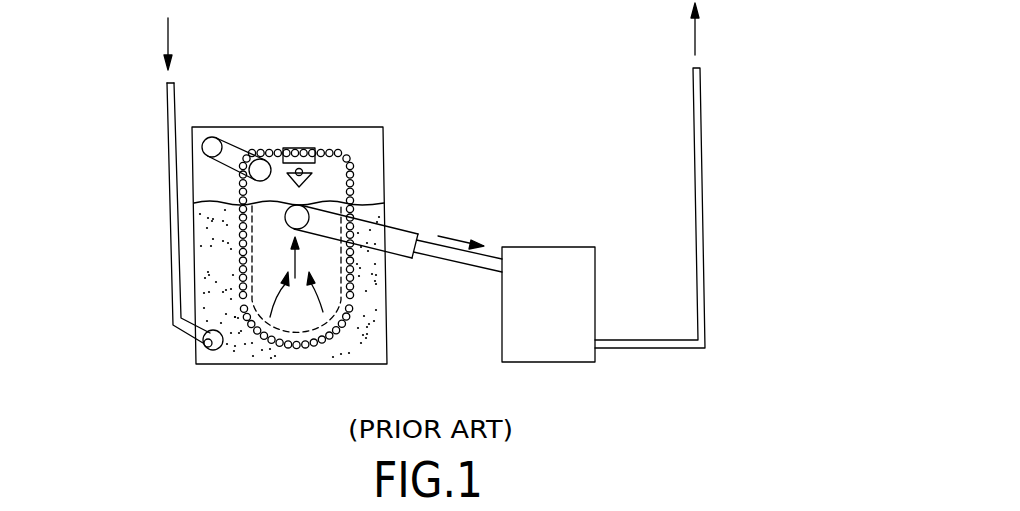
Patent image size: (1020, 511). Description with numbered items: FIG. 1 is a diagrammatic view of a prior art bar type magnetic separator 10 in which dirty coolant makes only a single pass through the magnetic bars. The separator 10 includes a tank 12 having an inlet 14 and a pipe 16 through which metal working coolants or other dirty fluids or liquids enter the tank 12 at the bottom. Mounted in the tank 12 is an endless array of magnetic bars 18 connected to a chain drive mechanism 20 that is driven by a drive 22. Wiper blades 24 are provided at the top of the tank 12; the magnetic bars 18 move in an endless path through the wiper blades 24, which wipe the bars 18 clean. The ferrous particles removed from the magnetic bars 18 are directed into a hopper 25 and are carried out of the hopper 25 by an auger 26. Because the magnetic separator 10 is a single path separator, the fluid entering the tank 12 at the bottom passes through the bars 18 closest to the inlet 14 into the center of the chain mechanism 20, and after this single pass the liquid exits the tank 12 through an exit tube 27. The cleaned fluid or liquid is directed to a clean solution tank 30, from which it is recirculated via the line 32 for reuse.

The magnetic separator 10 is at (233, 386).
The tank 12 is at (387, 345).
The inlet 14 is at (210, 350).
The pipe 16 is at (167, 223).
The magnetic bars 18 is at (352, 160).
The chain drive mechanism 20 is at (247, 176).
The drive 22 is at (210, 137).
The wiper blades 24 is at (297, 147).
The hopper 25 is at (305, 180).
The auger 26 is at (302, 169).
The exit tube 27 is at (397, 229).
The clean solution tank 30 is at (553, 363).
The line 32 is at (695, 172).